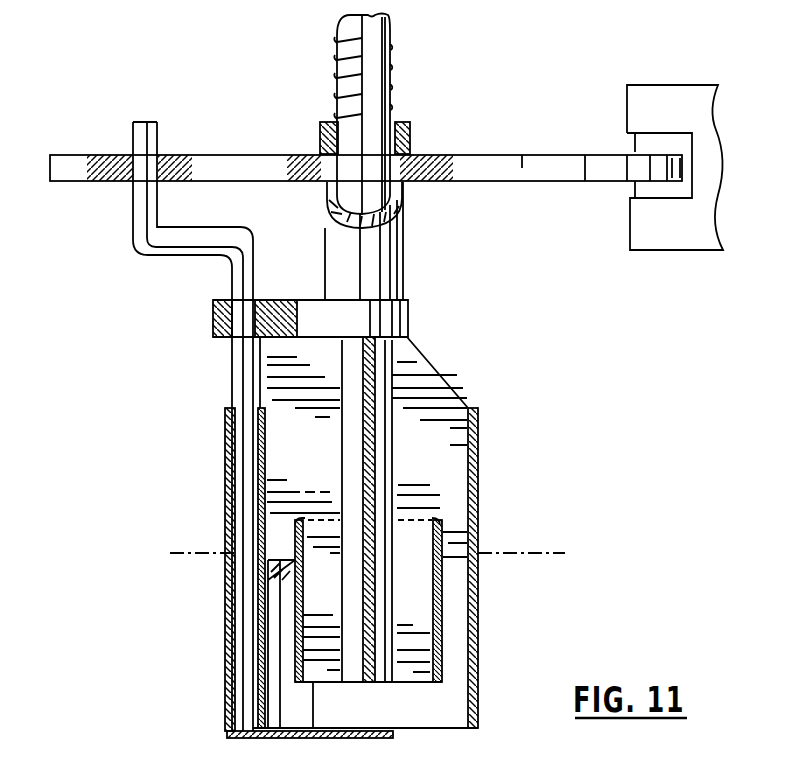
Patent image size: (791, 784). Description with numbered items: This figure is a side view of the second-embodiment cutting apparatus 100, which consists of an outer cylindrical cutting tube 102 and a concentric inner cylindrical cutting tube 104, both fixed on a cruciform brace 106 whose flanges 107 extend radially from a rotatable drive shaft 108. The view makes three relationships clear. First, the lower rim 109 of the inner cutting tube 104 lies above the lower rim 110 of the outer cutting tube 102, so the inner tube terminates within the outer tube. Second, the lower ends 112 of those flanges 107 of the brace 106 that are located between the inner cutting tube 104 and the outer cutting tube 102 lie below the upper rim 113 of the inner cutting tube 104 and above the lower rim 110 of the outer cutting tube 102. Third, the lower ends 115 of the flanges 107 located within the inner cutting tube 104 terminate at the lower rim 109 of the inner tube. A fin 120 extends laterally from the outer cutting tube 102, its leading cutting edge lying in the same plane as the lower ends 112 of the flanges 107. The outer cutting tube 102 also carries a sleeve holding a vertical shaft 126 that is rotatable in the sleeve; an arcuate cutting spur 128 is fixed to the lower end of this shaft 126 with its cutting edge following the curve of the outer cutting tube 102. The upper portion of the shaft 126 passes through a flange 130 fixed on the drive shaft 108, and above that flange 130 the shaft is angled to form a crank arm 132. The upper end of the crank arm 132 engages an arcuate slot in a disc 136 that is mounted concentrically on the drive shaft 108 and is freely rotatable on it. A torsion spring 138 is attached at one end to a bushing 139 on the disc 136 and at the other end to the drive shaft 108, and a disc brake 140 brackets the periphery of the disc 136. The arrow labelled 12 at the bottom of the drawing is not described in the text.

The direction arrow 12 is at (367, 740).
The cutting apparatus 100 is at (197, 633).
The outer cylindrical cutting tube 102 is at (480, 616).
The inner cylindrical cutting tube 104 is at (438, 646).
The cruciform brace 106 is at (438, 352).
The flanges 107 is at (453, 447).
The rotatable drive shaft 108 is at (392, 27).
The lower rim of inner cutting tube 109 is at (437, 687).
The lower rim of outer cutting tube 110 is at (474, 723).
The lower ends of flanges 112 is at (268, 580).
The upper rim of inner cutting tube 113 is at (437, 518).
The lower ends of flanges 115 is at (328, 682).
The fin 120 is at (530, 552).
The vertical shaft 126 is at (238, 371).
The arcuate cutting spur 128 is at (270, 733).
The flange 130 is at (213, 322).
The crank arm 132 is at (137, 225).
The disc 136 is at (535, 168).
The torsion spring 138 is at (392, 70).
The bushing 139 is at (410, 132).
The disc brake 140 is at (666, 235).